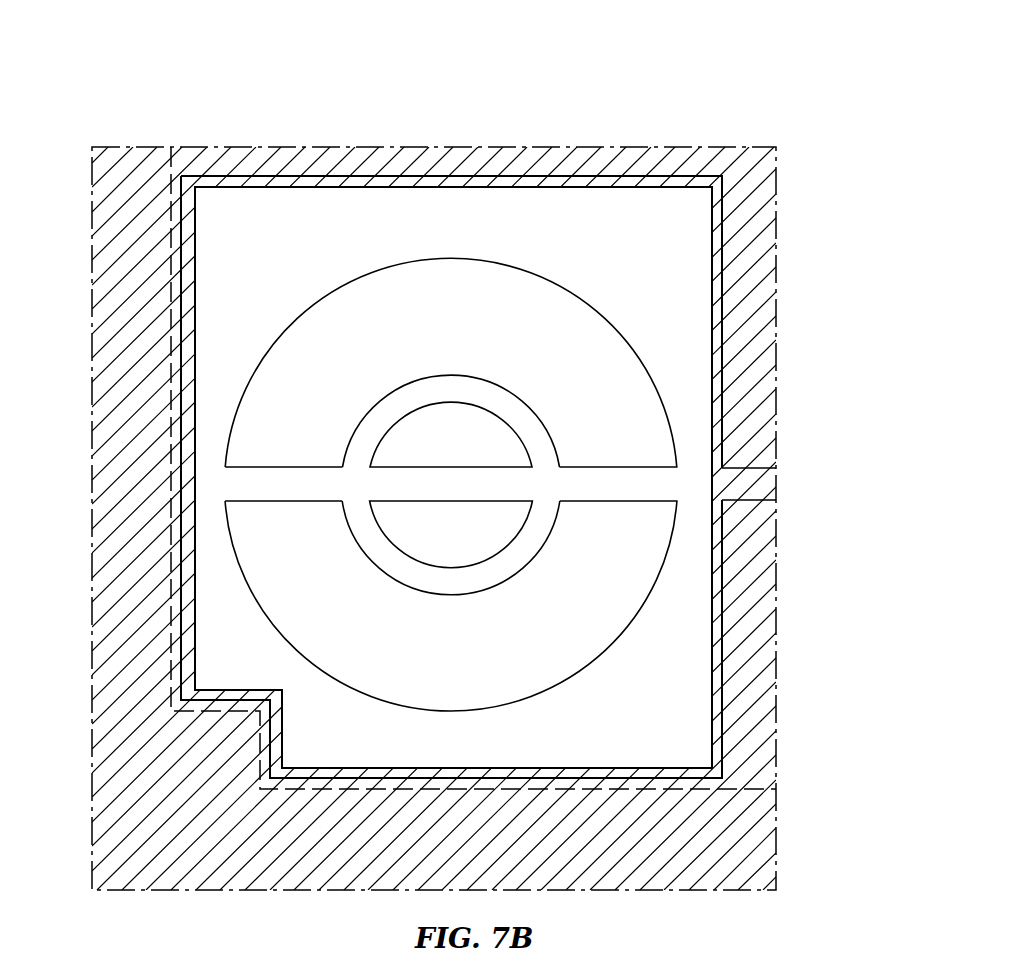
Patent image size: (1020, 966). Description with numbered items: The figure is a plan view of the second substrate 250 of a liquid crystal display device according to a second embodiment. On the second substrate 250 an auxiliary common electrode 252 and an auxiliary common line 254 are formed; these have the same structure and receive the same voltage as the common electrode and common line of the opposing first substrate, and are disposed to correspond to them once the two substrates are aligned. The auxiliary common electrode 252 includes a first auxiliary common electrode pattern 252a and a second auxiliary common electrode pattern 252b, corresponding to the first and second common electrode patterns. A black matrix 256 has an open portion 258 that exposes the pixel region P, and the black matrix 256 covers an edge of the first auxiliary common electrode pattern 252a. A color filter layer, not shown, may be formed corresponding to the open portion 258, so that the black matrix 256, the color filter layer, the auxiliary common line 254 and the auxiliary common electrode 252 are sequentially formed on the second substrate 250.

The second substrate 250 is at (752, 148).
The auxiliary common electrode 252 is at (433, 35).
The first auxiliary common electrode pattern 252a is at (328, 207).
The second auxiliary common electrode pattern 252b is at (450, 390).
The auxiliary common line 254 is at (776, 468).
The black matrix 256 is at (745, 382).
The open portion 258 is at (668, 270).
The pixel region P is at (173, 183).